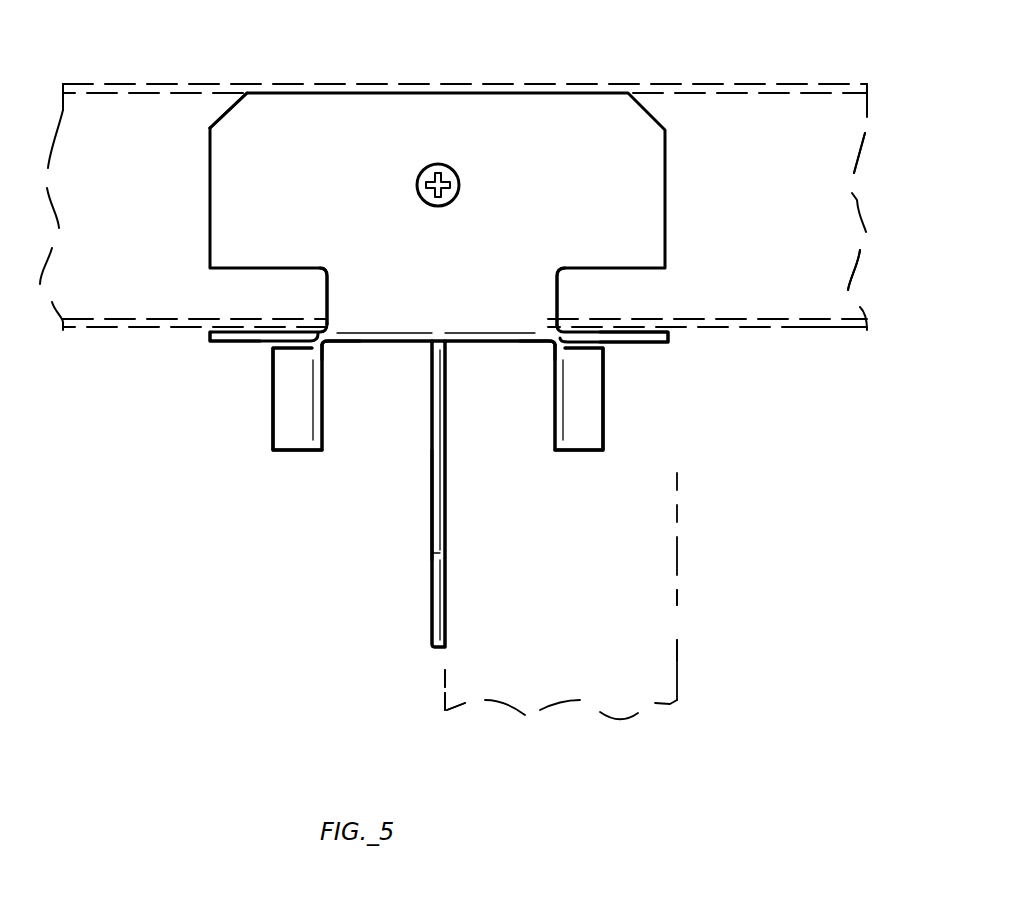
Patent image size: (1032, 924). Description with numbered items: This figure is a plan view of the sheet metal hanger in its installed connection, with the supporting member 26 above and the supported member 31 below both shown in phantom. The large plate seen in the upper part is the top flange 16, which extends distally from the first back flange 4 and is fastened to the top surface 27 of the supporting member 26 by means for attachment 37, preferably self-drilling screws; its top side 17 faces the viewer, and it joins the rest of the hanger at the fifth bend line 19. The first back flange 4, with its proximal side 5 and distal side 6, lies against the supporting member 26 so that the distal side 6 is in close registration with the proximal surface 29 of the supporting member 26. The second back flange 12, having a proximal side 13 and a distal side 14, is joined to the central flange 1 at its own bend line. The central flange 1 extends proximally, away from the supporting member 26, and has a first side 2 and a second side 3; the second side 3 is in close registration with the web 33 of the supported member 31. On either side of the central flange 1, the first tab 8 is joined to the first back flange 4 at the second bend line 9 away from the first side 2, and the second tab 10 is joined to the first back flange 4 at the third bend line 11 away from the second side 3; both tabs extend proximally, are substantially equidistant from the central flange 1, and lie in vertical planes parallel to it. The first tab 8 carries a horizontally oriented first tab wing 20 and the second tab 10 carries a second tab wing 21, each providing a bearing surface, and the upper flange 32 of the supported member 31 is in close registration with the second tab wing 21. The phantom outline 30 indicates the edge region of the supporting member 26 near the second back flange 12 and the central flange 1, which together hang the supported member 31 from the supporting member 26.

The central flange 1 is at (415, 594).
The first side 2 is at (432, 500).
The second side 3 is at (447, 477).
The first back flange 4 is at (208, 352).
The proximal side 5 is at (262, 350).
The distal side 6 is at (222, 325).
The first tab 8 is at (323, 424).
The second bend line 9 is at (327, 350).
The second tab 10 is at (555, 432).
The third bend line 11 is at (552, 348).
The second back flange 12 is at (640, 363).
The proximal side 13 is at (663, 347).
The distal side 14 is at (647, 328).
The top flange 16 is at (210, 100).
The top side 17 is at (362, 100).
The fifth bend line 19 is at (418, 332).
The first tab wing 20 is at (272, 420).
The second tab wing 21 is at (604, 432).
The supporting member 26 is at (803, 78).
The top surface 27 is at (855, 156).
The proximal surface 29 is at (795, 332).
The panel side edge 30 is at (742, 322).
The supported member 31 is at (688, 555).
The upper flange 32 is at (648, 617).
The web 33 is at (468, 669).
The means for attachment 37 is at (448, 163).